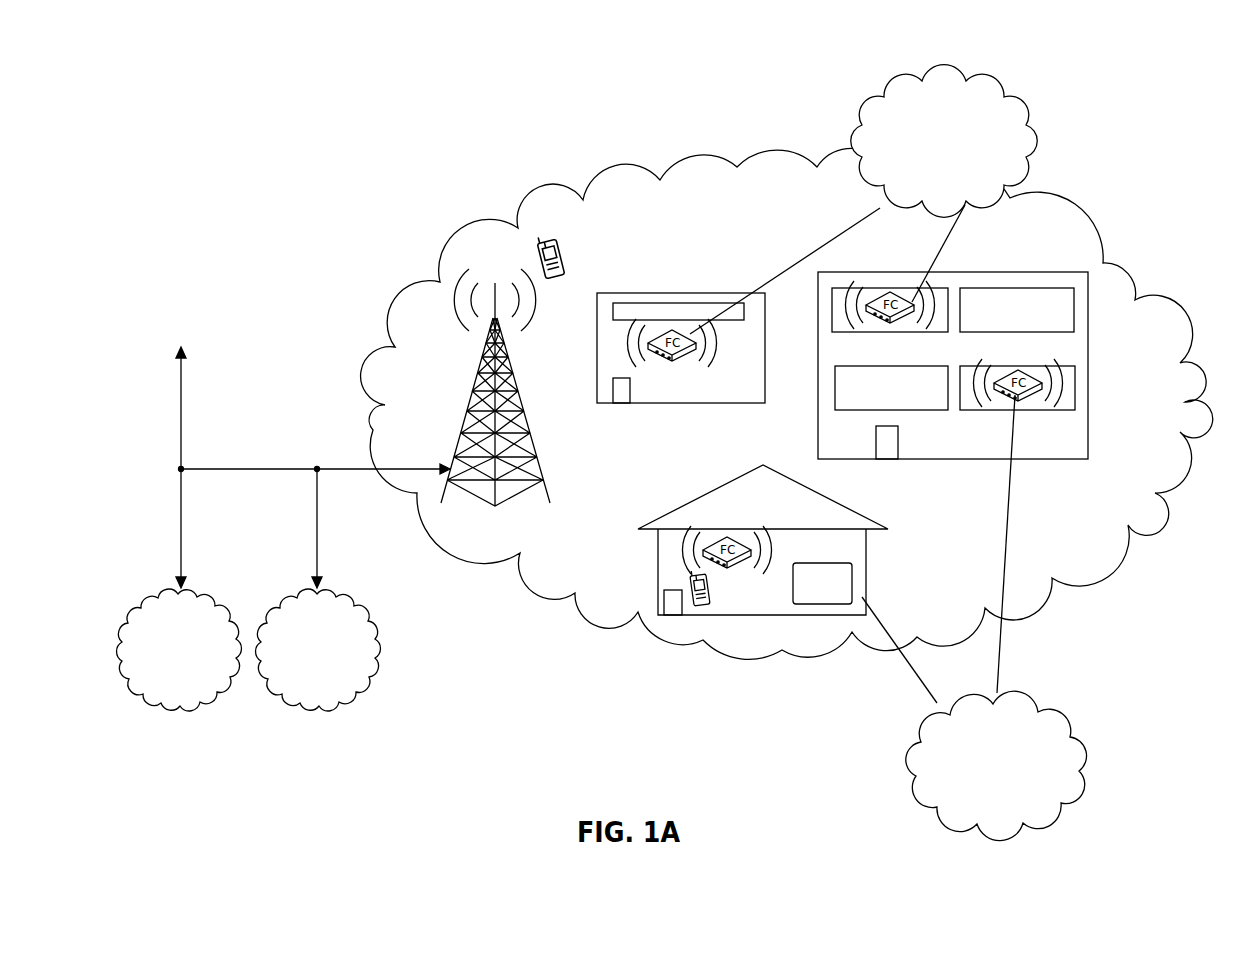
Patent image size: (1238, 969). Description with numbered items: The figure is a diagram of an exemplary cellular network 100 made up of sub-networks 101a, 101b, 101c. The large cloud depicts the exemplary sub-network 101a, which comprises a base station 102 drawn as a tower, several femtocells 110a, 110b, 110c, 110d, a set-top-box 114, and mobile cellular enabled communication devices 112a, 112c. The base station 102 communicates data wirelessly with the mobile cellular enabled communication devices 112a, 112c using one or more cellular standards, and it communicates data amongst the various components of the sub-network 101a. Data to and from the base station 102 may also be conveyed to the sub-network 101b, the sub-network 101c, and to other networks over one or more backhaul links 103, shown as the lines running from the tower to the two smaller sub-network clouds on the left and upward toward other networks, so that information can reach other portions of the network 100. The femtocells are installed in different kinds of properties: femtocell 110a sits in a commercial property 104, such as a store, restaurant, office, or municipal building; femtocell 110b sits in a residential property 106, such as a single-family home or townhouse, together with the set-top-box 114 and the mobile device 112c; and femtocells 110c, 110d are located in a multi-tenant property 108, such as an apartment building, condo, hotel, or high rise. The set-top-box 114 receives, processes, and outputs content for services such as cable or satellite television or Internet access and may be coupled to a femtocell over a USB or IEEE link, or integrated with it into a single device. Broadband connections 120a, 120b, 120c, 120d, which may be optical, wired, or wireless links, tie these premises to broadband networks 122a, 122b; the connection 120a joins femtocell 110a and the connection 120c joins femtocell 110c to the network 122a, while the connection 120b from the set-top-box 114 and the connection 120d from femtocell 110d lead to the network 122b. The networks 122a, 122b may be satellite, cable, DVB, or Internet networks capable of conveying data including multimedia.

The cellular network 100 is at (1178, 130).
The sub-network 101a is at (543, 185).
The sub-network 101b is at (178, 712).
The sub-network 101c is at (316, 712).
The base station 102 is at (512, 378).
The backhaul links 103 is at (240, 469).
The commercial properties 104 is at (682, 291).
The residential properties 106 is at (860, 507).
The multi-tenant properties 108 is at (968, 272).
The femtocell 110a is at (692, 360).
The femtocell 110b is at (768, 586).
The femtocell 110c is at (906, 326).
The femtocell 110d is at (1028, 398).
The mobile cellular enabled communication device 112a is at (566, 259).
The mobile cellular enabled communication device 112c is at (708, 600).
The set-top-box 114 is at (808, 565).
The broadband connection 120a is at (838, 232).
The broadband connection 120b is at (906, 676).
The broadband connection 120c is at (918, 252).
The broadband connection 120d is at (1010, 570).
The network 122a is at (1037, 151).
The network 122b is at (1093, 729).